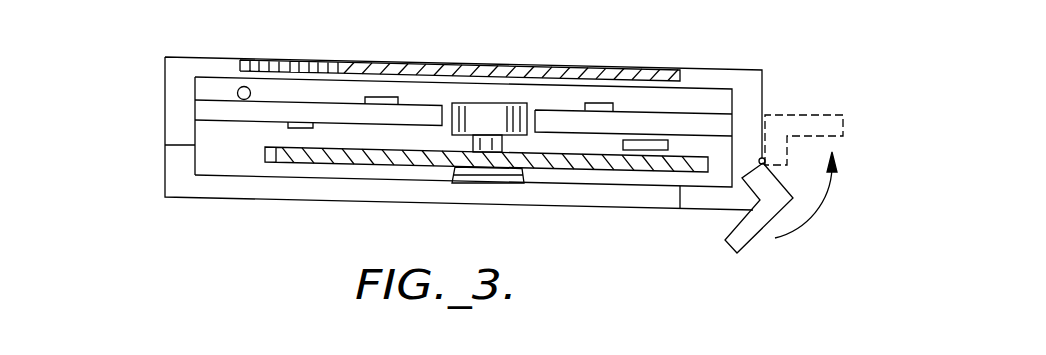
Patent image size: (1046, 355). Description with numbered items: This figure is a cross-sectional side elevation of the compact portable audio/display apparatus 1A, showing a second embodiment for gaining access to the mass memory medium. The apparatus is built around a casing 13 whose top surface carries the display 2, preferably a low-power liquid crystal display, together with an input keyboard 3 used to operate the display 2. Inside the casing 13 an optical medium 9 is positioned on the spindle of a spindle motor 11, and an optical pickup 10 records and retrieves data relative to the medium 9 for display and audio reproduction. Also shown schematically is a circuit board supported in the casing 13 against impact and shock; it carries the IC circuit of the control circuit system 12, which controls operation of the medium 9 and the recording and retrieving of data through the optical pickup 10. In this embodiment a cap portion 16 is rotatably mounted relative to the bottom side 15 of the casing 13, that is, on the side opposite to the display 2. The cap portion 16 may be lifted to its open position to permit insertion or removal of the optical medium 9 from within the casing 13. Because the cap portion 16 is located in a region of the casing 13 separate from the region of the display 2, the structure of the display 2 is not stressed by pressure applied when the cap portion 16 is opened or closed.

The housing 1A is at (182, 66).
The display 2 is at (612, 73).
The input keyboard 3 is at (291, 63).
The optical medium 9 is at (297, 157).
The optical pickup 10 is at (655, 147).
The spindle motor 11 is at (487, 108).
The control circuit system 12 is at (243, 112).
The casing 13 is at (165, 166).
The bottom side 15 is at (555, 197).
The cap portion 16 is at (735, 236).